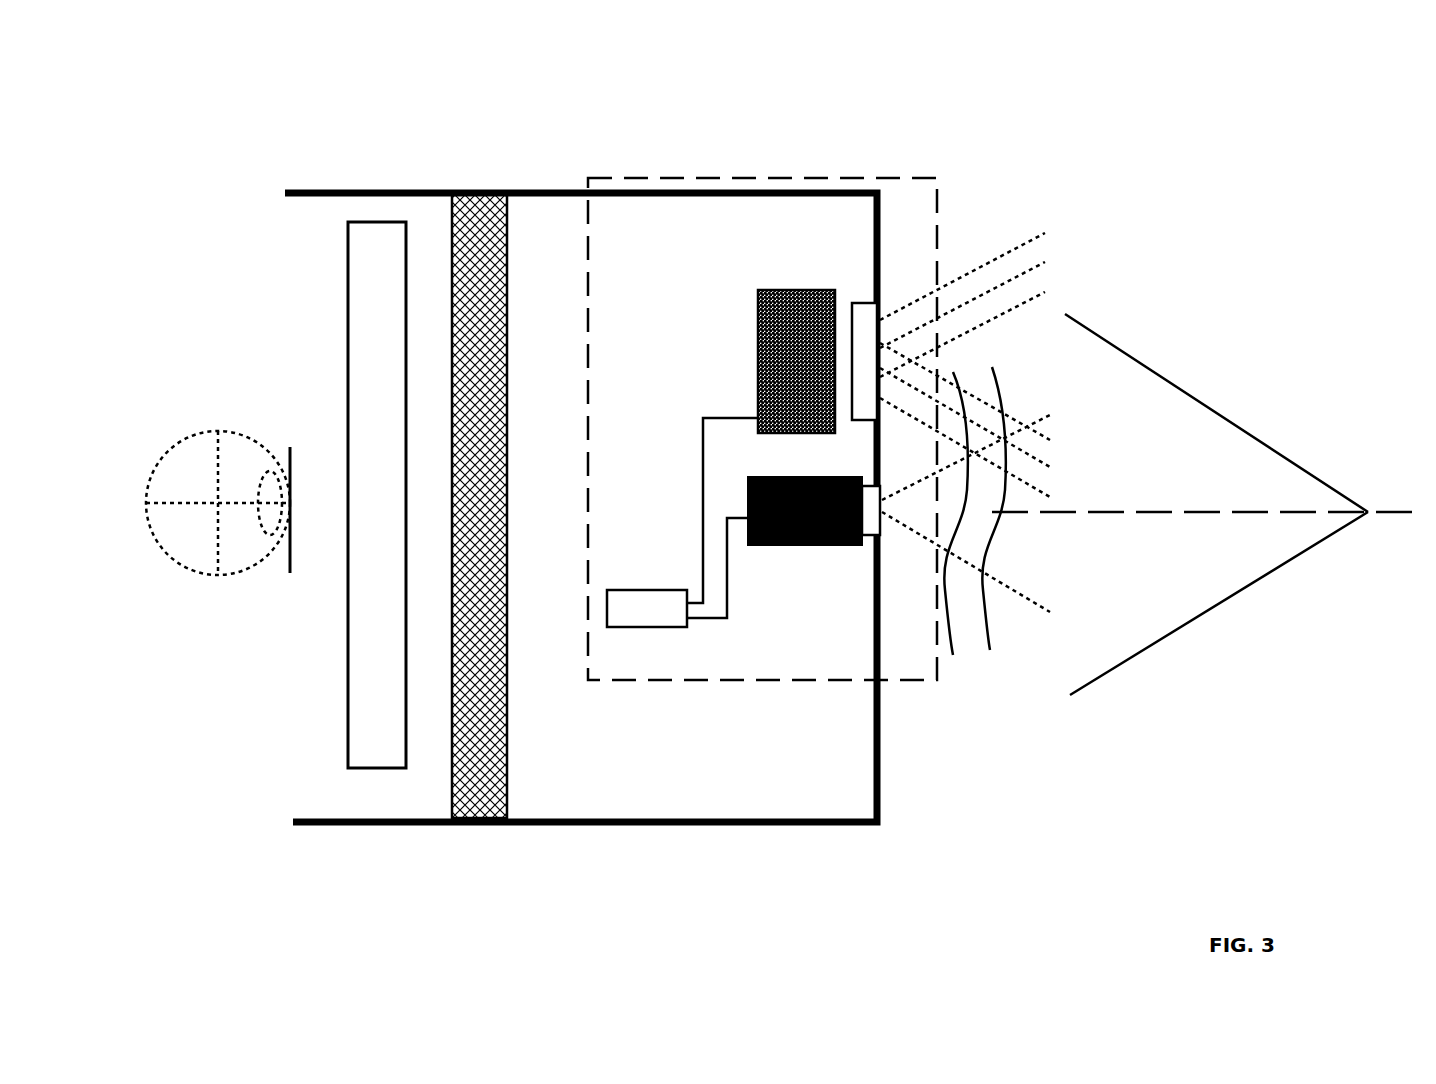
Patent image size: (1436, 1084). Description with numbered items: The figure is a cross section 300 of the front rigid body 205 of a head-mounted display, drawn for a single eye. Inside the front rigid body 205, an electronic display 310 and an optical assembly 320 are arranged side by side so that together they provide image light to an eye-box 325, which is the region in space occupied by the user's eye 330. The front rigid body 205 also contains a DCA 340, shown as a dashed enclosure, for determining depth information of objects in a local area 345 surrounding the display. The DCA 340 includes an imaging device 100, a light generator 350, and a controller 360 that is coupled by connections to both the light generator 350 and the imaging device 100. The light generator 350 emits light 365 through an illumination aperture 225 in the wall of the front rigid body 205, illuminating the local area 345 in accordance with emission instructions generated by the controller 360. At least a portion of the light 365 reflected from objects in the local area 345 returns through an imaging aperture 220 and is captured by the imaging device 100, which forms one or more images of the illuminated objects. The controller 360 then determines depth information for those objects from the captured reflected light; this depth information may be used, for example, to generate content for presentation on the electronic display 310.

The cross section 300 is at (208, 101).
The imaging device 100 is at (808, 545).
The front rigid body 205 is at (840, 825).
The imaging aperture 220 is at (882, 528).
The illumination aperture 225 is at (880, 300).
The electronic display 310 is at (452, 248).
The optical assembly 320 is at (393, 768).
The eye-box 325 is at (290, 447).
The eye 330 is at (180, 563).
The DCA 340 is at (623, 177).
The local area 345 is at (1215, 592).
The light generator 350 is at (798, 290).
The controller 360 is at (617, 627).
The light 365 is at (997, 278).